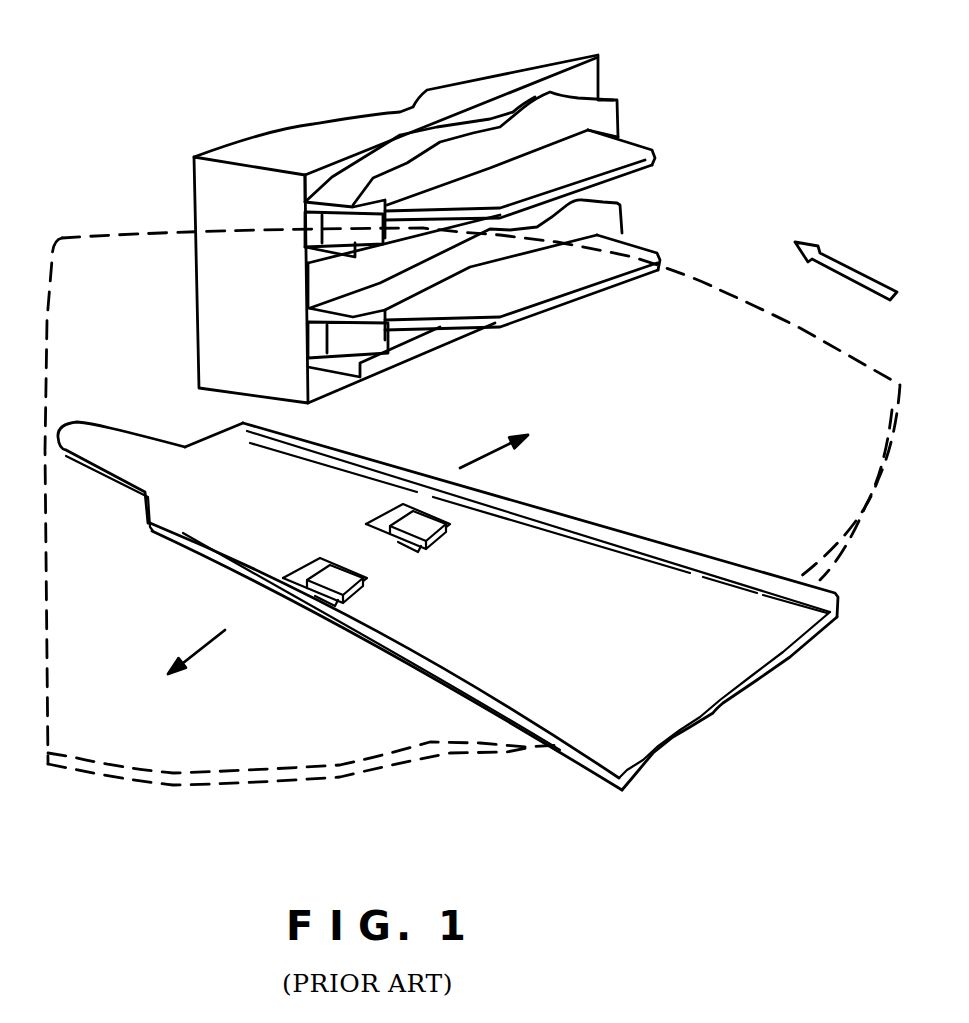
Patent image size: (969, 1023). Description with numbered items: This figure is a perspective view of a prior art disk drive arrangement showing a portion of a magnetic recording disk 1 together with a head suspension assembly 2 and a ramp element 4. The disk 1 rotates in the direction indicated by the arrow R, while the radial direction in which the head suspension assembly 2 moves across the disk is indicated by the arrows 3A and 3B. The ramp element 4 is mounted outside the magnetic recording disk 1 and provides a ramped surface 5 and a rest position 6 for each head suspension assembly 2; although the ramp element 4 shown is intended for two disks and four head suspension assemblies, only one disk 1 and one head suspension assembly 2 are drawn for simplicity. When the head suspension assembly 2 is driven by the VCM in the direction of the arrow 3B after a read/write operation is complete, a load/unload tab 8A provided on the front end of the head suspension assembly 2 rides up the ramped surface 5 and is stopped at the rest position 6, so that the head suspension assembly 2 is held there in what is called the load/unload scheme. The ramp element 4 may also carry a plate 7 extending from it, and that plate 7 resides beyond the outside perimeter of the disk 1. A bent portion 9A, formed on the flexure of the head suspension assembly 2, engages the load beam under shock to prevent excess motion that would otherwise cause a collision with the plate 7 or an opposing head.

The magnetic recording disk 1 is at (755, 325).
The head suspension assembly 2 is at (593, 720).
The arrow 3A is at (207, 645).
The arrow 3B is at (490, 449).
The ramp element 4 is at (302, 128).
The ramped surface 5 is at (350, 185).
The rest position 6 is at (523, 113).
The plate 7 is at (622, 155).
The load/unload tab 8A is at (100, 437).
The bent portion 9A is at (362, 586).
The arrow R is at (846, 271).